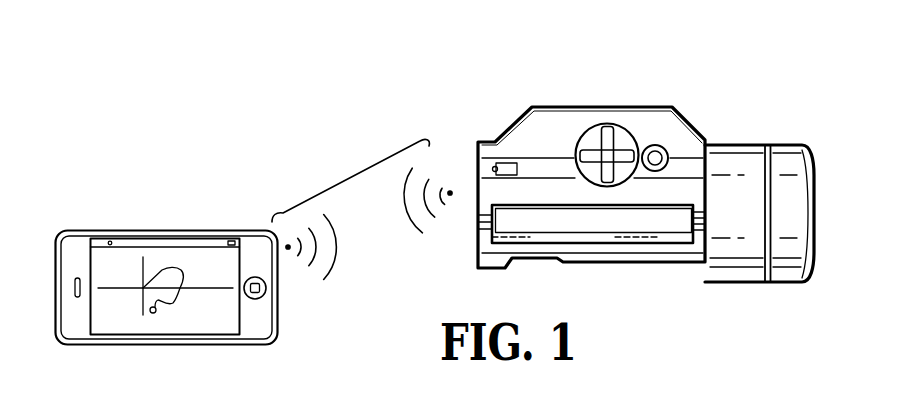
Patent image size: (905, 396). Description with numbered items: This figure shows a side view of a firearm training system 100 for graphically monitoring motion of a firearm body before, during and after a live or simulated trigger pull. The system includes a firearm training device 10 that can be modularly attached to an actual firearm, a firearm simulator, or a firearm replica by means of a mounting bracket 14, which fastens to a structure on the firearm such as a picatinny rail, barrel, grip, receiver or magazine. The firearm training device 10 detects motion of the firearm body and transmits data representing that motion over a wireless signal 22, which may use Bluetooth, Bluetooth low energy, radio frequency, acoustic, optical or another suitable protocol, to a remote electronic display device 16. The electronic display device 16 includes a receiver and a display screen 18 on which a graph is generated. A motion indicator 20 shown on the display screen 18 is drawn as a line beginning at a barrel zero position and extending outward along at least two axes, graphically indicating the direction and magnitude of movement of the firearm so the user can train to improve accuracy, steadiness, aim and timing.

The firearm training system 100 is at (200, 63).
The firearm training device 10 is at (750, 110).
The mounting bracket 14 is at (615, 107).
The electronic display device 16 is at (200, 231).
The display screen 18 is at (222, 323).
The motion indicator 20 is at (177, 303).
The wireless signal 22 is at (348, 170).